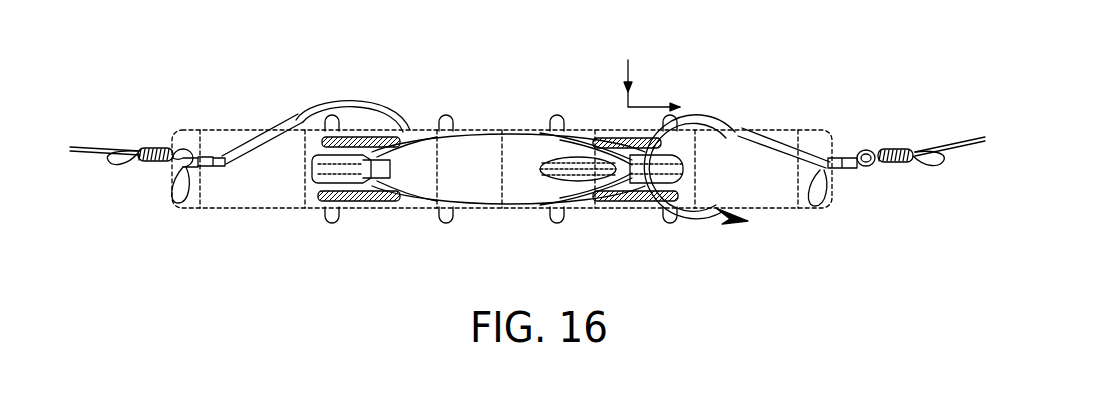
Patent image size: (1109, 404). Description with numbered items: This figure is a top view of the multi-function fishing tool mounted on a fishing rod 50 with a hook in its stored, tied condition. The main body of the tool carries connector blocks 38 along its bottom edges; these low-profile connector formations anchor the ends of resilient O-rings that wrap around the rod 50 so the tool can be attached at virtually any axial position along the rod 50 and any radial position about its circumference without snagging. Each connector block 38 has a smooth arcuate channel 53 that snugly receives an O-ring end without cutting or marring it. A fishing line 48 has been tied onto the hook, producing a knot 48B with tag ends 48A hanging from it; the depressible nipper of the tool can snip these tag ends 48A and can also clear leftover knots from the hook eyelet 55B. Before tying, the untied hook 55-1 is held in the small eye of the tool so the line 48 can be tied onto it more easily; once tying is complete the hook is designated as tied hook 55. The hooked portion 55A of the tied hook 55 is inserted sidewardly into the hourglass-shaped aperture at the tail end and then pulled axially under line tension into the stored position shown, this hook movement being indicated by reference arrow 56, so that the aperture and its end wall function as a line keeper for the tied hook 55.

The rod 50 is at (262, 190).
The connector blocks 38 is at (372, 152).
The arcuate channels 53 is at (343, 153).
The untied hook 55-1 is at (292, 122).
The tied hook 55 is at (743, 110).
The hooked portion 55A is at (685, 232).
The hook eyelet 55B is at (860, 165).
The reference arrow 56 is at (647, 107).
The fishing line 48 is at (943, 130).
The tag ends 48A is at (923, 167).
The knot 48B is at (888, 132).